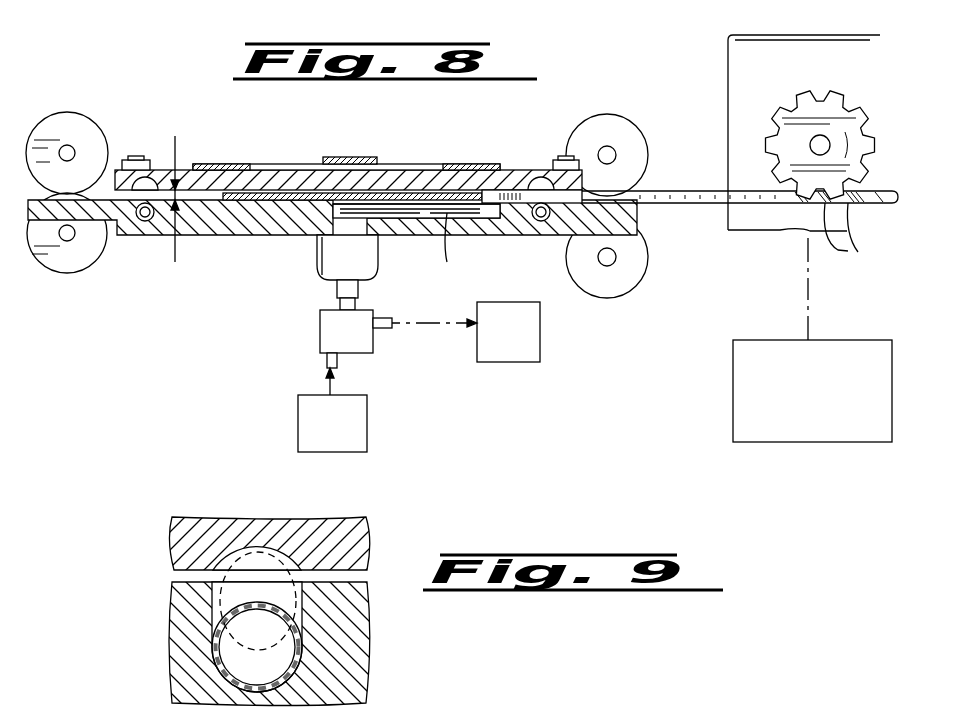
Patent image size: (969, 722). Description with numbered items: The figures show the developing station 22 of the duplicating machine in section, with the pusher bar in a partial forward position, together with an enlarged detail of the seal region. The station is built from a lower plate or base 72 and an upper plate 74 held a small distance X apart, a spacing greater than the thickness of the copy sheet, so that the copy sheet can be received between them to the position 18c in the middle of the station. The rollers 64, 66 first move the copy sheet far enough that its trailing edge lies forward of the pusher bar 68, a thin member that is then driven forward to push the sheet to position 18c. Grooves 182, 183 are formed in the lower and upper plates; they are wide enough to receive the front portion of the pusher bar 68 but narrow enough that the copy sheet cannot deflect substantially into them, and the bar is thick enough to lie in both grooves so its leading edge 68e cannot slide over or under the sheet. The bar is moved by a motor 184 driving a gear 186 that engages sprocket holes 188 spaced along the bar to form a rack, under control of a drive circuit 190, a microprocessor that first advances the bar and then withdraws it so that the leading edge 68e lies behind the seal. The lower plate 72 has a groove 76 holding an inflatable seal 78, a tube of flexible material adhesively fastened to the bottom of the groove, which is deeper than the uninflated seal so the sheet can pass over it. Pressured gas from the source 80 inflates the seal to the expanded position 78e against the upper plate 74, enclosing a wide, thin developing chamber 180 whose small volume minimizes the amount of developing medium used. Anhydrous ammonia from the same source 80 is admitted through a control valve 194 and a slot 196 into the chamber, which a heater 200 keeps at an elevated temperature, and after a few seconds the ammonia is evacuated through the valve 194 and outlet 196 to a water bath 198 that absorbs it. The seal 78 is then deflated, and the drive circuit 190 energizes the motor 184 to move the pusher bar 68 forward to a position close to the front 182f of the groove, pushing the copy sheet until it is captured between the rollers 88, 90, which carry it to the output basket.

In FIG. 8, the developing station 22 is at (256, 302).
In FIG. 8, the roller 64 is at (623, 144).
In FIG. 8, the roller 66 is at (632, 288).
In FIG. 8, the pusher bar 68 is at (668, 206).
In FIG. 8, the leading edge of pusher bar 68e is at (473, 196).
In FIG. 8, the lower plate 72 is at (208, 226).
In FIG. 9, the lower plate 72 is at (172, 592).
In FIG. 8, the upper plate 74 is at (518, 176).
In FIG. 9, the upper plate 74 is at (227, 521).
In FIG. 8, the groove 76 is at (543, 222).
In FIG. 9, the groove 76 is at (236, 600).
In FIG. 8, the inflatable seal 78 is at (145, 222).
In FIG. 9, the inflatable seal 78 is at (220, 666).
In FIG. 9, the expanded position of seal 78e is at (258, 548).
In FIG. 8, the source 80 is at (344, 438).
In FIG. 8, the roller 88 is at (73, 112).
In FIG. 8, the roller 90 is at (70, 274).
In FIG. 8, the copy sheet position 18c is at (268, 192).
In FIG. 8, the developing chamber 180 is at (210, 192).
In FIG. 8, the groove in lower plate 182 is at (325, 200).
In FIG. 8, the front of groove 182f is at (290, 210).
In FIG. 8, the groove in upper plate 183 is at (406, 214).
In FIG. 8, the motor 184 is at (748, 60).
In FIG. 8, the gear 186 is at (776, 130).
In FIG. 8, the sprocket holes 188 is at (838, 242).
In FIG. 8, the drive circuit 190 is at (792, 428).
In FIG. 8, the control valve 194 is at (358, 346).
In FIG. 8, the slot 196 is at (400, 370).
In FIG. 8, the water bath 198 is at (520, 346).
In FIG. 8, the heater 200 is at (403, 202).
In FIG. 8, the distance between plates X is at (174, 188).